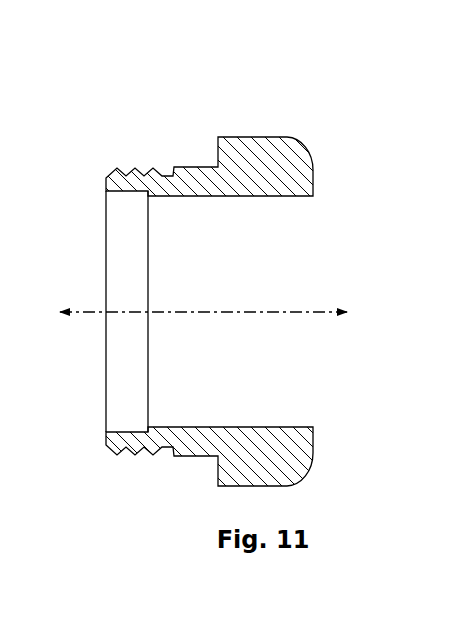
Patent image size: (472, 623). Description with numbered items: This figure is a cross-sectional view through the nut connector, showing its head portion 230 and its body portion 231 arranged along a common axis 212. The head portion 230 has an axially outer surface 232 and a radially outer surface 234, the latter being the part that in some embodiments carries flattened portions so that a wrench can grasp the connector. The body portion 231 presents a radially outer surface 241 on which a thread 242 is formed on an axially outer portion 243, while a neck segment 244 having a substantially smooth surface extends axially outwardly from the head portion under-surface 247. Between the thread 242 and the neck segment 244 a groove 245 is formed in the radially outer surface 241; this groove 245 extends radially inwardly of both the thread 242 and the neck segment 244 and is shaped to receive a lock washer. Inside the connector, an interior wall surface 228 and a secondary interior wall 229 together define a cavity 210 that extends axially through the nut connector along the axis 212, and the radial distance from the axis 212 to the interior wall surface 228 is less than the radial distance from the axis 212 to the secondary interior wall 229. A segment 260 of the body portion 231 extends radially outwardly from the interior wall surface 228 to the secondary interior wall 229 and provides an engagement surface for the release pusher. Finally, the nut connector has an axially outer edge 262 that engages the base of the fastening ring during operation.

The cavity 210 is at (297, 262).
The axis 212 is at (220, 305).
The interior wall surface 228 is at (232, 198).
The secondary interior wall 229 is at (127, 193).
The head portion 230 is at (255, 65).
The body portion 231 is at (137, 98).
The axially outer surface 232 is at (314, 174).
The radially outer surface 234 is at (277, 136).
The radially outer surface 241 is at (148, 523).
The thread 242 is at (121, 168).
The axially outer portion 243 is at (135, 461).
The neck segment 244 is at (196, 165).
The groove 245 is at (170, 170).
The head portion under-surface 247 is at (215, 468).
The segment 260 is at (147, 430).
The axially outer edge 262 is at (105, 185).